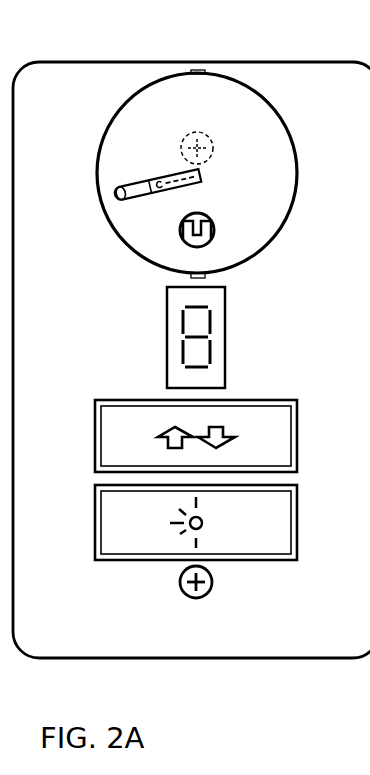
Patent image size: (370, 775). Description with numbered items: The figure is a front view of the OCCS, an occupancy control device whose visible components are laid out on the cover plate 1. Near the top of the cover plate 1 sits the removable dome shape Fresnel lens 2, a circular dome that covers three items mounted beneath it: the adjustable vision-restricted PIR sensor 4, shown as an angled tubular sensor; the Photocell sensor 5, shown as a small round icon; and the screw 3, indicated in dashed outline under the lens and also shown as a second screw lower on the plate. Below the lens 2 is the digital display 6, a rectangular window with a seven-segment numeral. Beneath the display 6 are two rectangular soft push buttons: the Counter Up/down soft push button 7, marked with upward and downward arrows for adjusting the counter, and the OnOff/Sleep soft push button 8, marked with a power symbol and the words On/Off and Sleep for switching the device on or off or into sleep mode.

The cover plate 1 is at (191, 342).
The removable dome shape Fresnel lens 2 is at (277, 127).
The screw 3 is at (209, 138).
The adjustable vision-restricted PIR sensor 4 is at (163, 175).
The Photocell sensor 5 is at (213, 216).
The digital display 6 is at (219, 334).
The Counter Up/down soft push button 7 is at (216, 429).
The OnOff/Sleep soft push button 8 is at (215, 517).